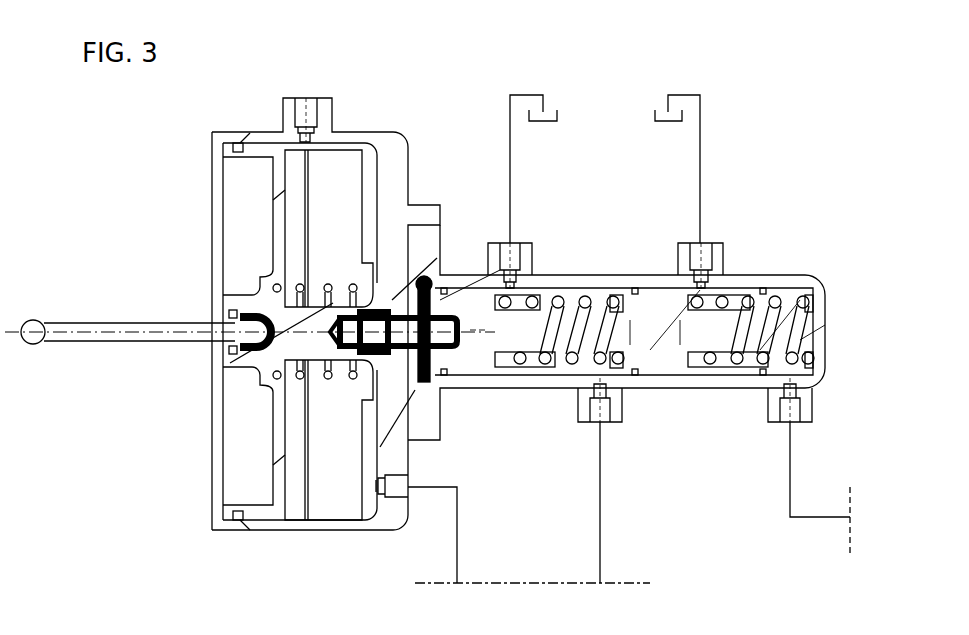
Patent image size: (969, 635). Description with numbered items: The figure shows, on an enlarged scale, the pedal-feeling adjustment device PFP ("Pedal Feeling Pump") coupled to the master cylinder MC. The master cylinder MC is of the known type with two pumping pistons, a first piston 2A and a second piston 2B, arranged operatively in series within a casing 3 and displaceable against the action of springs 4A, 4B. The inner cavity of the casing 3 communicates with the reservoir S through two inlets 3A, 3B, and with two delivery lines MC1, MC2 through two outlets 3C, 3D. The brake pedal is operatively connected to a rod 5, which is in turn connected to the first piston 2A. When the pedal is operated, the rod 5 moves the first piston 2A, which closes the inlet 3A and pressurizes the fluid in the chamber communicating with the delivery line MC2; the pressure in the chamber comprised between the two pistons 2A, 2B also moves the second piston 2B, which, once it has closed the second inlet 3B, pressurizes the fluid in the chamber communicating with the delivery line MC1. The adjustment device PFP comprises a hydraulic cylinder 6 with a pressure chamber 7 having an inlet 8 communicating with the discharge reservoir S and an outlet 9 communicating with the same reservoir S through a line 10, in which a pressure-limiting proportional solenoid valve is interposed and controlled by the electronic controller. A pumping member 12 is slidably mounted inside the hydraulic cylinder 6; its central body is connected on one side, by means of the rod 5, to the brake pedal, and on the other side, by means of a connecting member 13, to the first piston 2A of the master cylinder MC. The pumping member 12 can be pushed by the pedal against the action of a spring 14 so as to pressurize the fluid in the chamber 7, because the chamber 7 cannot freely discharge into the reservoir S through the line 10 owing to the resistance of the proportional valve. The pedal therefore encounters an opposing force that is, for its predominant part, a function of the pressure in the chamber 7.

The casing 3 is at (832, 341).
The inlet 3A is at (512, 243).
The inlet 3B is at (705, 243).
The outlet 3C is at (593, 424).
The outlet 3D is at (788, 424).
The first piston 2A is at (547, 360).
The second piston 2B is at (658, 345).
The spring 4A is at (583, 292).
The spring 4B is at (770, 292).
The rod 5 is at (115, 340).
The hydraulic cylinder 6 is at (380, 136).
The pressure chamber 7 is at (335, 505).
The inlet 8 is at (304, 100).
The outlet 9 is at (410, 491).
The line 10 is at (458, 503).
The pumping member 12 is at (265, 435).
The connecting member 13 is at (477, 274).
The spring 14 is at (325, 290).
The hydraulic adjustment device of the feeling on the brake pedal PFP is at (198, 232).
The master cylinder MC is at (793, 215).
The delivery line MC1 is at (792, 470).
The delivery line MC2 is at (601, 492).
The reservoir S is at (660, 105).